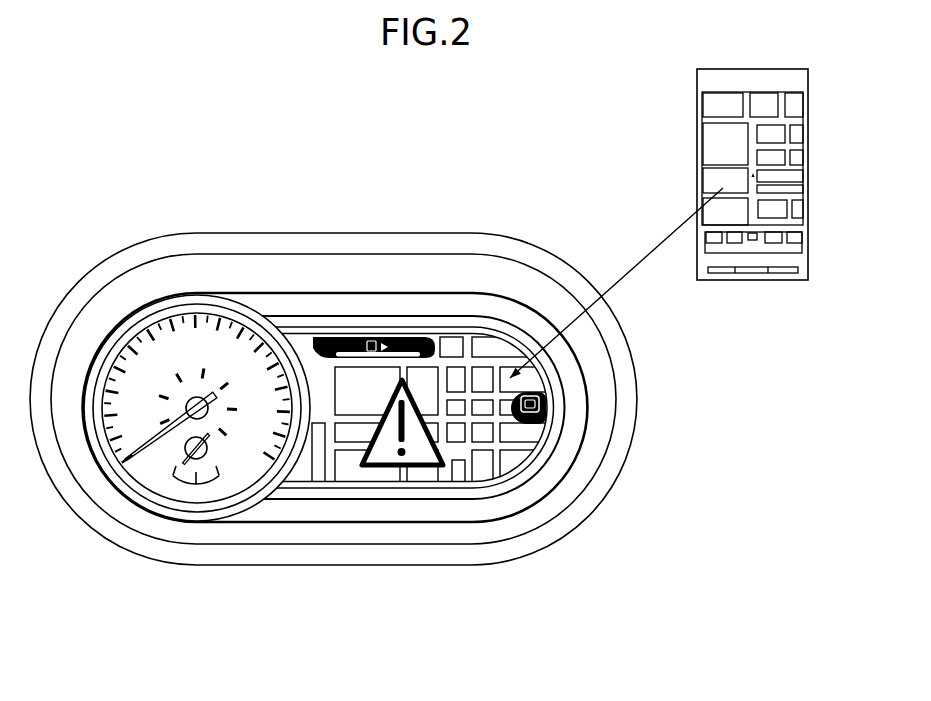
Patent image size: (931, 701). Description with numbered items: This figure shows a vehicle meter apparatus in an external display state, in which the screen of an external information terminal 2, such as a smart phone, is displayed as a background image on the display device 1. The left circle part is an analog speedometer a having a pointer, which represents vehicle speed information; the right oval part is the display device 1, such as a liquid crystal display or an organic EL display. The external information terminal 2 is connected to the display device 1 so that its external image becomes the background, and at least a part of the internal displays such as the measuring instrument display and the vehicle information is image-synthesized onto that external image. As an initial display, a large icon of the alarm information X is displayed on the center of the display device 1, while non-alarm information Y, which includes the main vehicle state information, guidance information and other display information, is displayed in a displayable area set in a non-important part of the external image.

The display device 1 is at (456, 316).
The external information terminal 2 is at (697, 92).
The speedometer a is at (188, 318).
The alarm information X is at (383, 463).
The non-alarm information Y is at (543, 414).